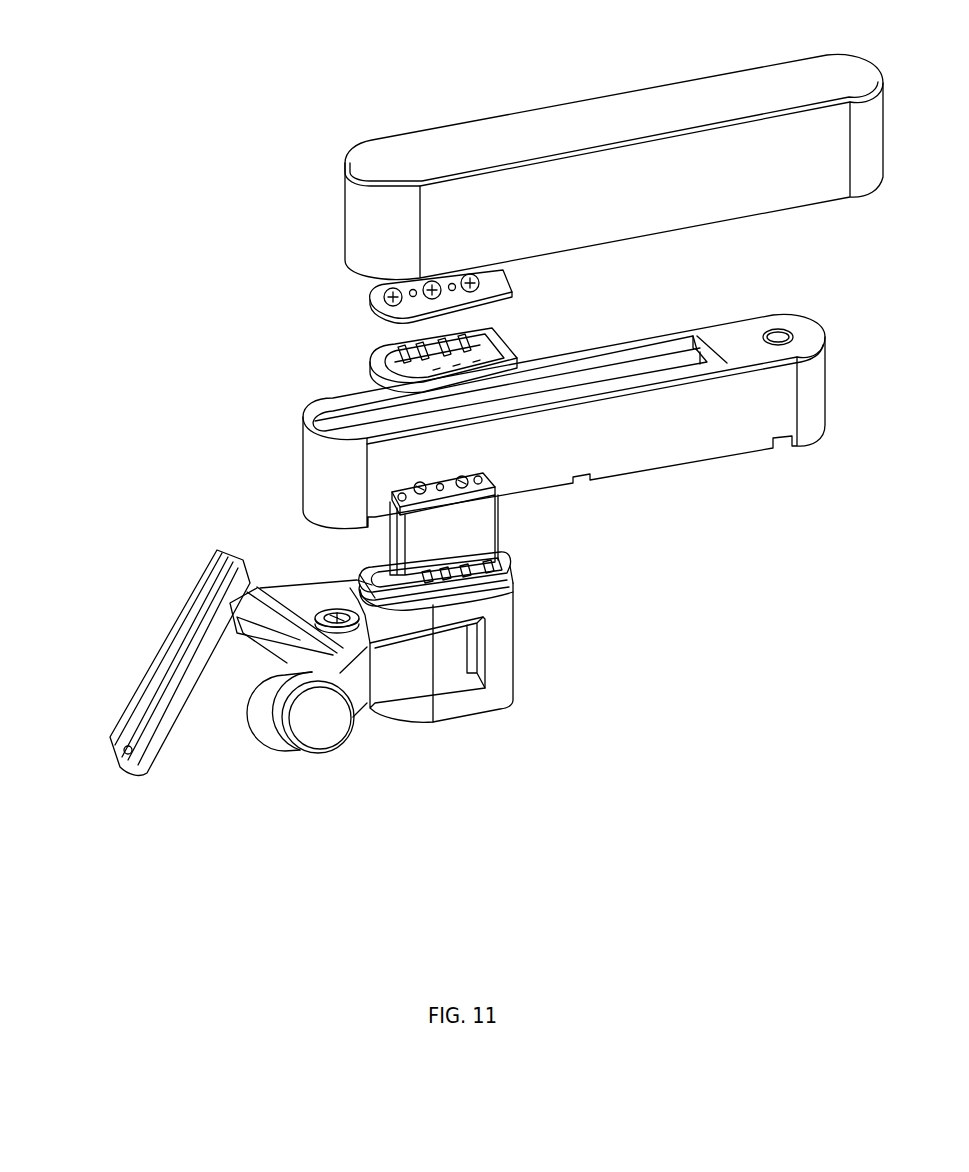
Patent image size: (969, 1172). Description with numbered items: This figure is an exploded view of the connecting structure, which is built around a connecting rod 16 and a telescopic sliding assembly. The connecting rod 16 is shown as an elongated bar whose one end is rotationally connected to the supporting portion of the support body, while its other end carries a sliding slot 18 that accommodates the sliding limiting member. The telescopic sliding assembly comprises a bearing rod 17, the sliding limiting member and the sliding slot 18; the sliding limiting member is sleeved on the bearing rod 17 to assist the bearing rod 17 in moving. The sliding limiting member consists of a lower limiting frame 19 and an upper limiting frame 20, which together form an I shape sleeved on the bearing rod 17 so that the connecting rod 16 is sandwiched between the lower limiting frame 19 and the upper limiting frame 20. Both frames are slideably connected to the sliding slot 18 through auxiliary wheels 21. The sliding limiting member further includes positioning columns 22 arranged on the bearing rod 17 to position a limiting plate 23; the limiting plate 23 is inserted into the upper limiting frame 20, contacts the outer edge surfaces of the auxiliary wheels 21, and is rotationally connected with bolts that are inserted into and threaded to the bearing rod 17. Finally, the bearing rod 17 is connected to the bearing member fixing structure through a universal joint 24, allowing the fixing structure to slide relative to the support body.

The connecting rod 16 is at (767, 417).
The limiting plate 23 is at (372, 293).
The upper limiting frame 20 is at (370, 360).
The sliding slot 18 is at (303, 417).
The positioning column 22 is at (408, 490).
The bearing rod 17 is at (390, 503).
The lower limiting frame 19 is at (370, 580).
The auxiliary wheel 21 is at (137, 737).
The universal joint 24 is at (330, 707).